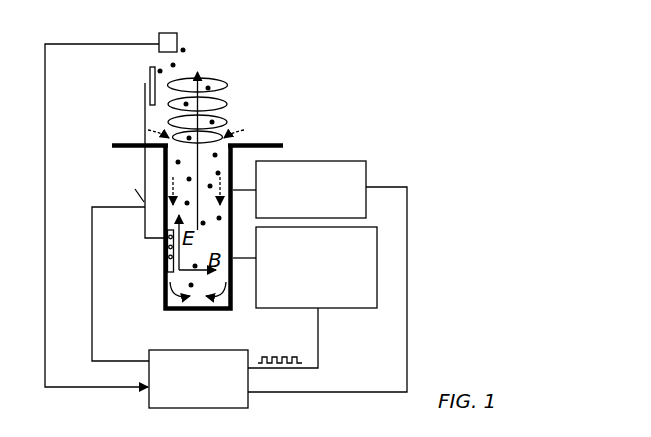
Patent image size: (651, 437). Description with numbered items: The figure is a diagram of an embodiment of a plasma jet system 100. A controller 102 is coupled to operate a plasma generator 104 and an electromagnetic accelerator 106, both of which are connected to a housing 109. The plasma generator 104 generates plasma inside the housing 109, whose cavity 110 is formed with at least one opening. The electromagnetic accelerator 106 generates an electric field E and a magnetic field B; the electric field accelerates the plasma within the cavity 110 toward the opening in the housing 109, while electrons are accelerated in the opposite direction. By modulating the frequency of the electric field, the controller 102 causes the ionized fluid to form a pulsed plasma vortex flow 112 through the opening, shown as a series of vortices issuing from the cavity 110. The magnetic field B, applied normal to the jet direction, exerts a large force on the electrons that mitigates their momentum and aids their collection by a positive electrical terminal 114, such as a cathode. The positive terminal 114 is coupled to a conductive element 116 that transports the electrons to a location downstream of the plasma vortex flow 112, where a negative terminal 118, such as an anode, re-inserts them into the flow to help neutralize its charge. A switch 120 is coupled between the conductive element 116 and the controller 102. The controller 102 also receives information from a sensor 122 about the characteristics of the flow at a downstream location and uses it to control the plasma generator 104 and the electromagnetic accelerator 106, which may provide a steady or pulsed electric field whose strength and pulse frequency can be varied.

The plasma jet system 100 is at (358, 62).
The controller 102 is at (218, 350).
The plasma generator 104 is at (328, 160).
The electromagnetic accelerator 106 is at (332, 311).
The housing 109 is at (163, 283).
The cavity 110 is at (170, 306).
The plasma vortex flow 112 is at (233, 100).
The positive electrical terminal 114 is at (165, 250).
The conductive element 116 is at (144, 112).
The negative terminal 118 is at (149, 70).
The switch 120 is at (133, 191).
The sensor 122 is at (160, 33).